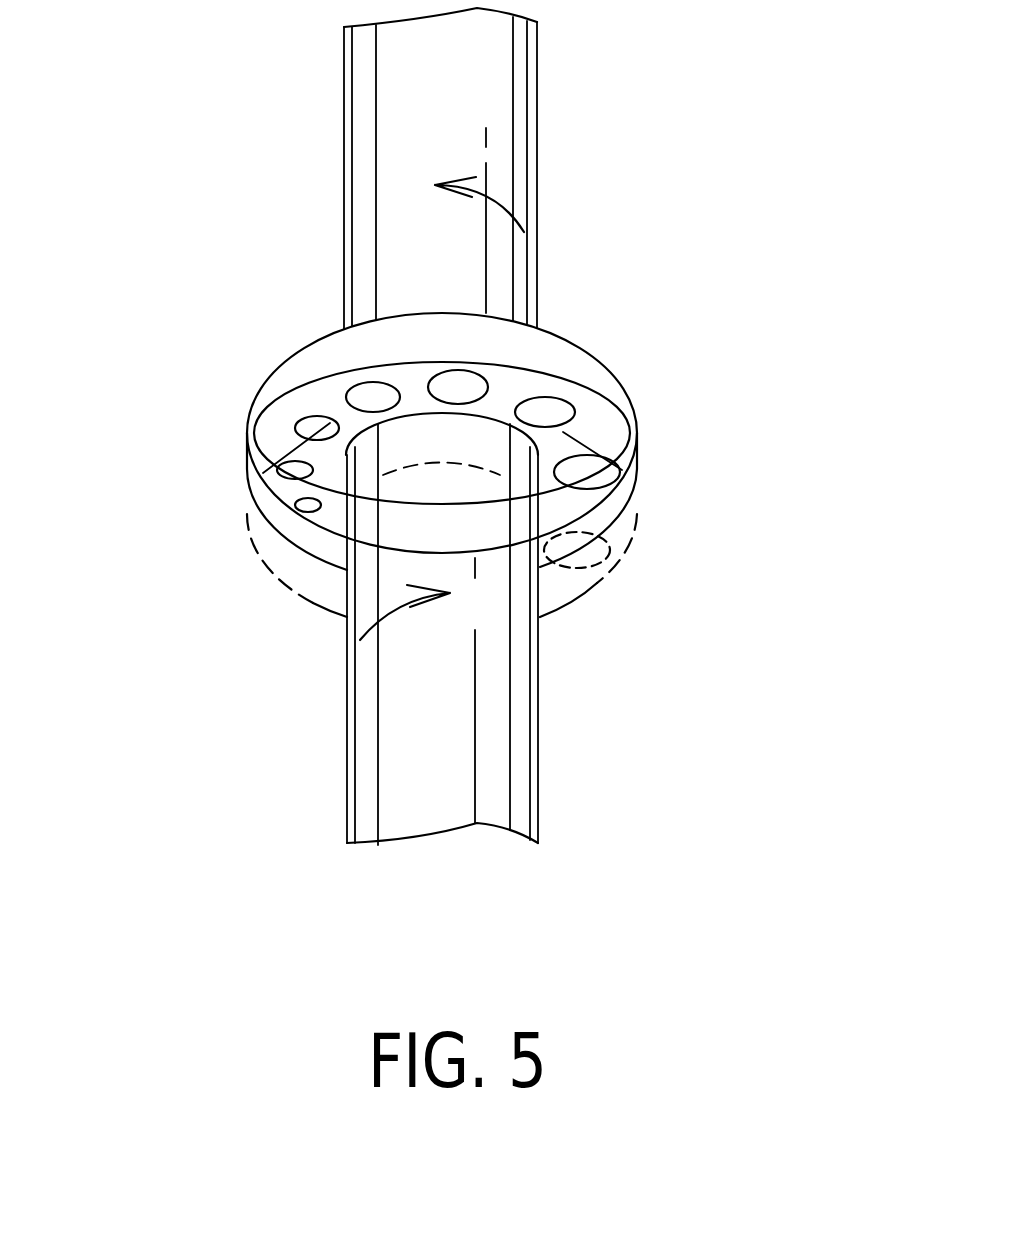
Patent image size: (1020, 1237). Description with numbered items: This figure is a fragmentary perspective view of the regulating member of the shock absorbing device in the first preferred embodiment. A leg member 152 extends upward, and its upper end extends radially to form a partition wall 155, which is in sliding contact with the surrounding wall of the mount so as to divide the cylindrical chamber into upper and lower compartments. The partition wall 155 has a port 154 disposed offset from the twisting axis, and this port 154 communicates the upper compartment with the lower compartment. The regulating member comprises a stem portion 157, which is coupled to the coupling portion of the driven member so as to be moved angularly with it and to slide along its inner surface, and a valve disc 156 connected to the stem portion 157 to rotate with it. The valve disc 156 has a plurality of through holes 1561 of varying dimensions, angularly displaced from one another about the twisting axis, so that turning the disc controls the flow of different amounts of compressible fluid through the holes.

The leg member 152 is at (497, 768).
The port 154 is at (592, 568).
The partition wall 155 is at (615, 534).
The valve disc 156 is at (590, 368).
The through holes 1561 is at (453, 390).
The stem portion 157 is at (493, 99).